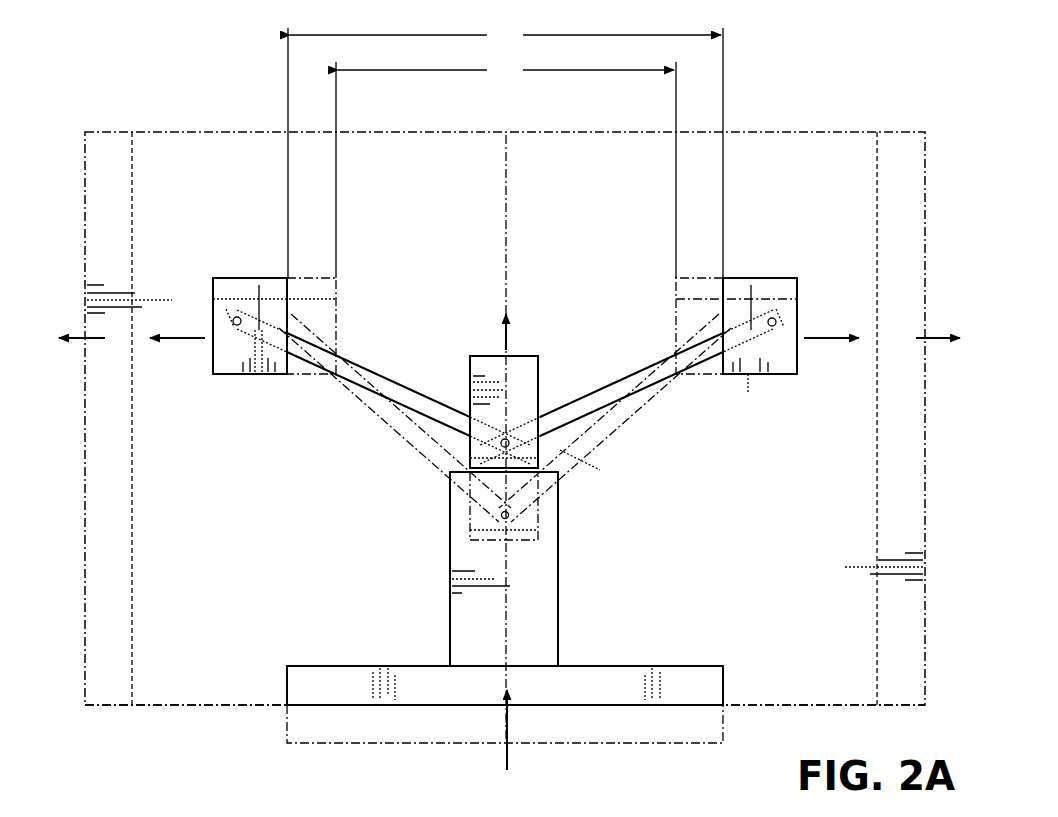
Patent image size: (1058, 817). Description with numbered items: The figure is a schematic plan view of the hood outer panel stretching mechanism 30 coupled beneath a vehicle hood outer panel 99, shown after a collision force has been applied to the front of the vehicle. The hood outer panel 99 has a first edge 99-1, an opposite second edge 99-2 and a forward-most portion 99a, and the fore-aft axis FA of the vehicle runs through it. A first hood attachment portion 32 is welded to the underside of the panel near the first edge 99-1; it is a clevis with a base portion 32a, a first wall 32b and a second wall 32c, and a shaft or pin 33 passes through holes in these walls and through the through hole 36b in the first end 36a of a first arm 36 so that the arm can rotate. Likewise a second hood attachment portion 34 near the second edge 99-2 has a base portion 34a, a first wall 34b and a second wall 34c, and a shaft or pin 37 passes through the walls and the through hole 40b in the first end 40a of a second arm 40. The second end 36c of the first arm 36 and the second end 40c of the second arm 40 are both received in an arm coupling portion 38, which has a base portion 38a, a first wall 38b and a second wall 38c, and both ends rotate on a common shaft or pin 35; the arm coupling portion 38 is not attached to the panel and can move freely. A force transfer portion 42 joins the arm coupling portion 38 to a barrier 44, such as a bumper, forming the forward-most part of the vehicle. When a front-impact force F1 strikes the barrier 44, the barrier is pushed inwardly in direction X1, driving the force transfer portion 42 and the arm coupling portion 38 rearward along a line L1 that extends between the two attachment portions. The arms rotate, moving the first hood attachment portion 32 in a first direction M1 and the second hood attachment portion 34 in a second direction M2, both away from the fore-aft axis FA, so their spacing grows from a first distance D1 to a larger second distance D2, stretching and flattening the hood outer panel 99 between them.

The hood outer panel stretching mechanism 30 is at (224, 562).
The first hood attachment portion 32 is at (210, 345).
The base portion 32a is at (214, 318).
The first wall 32b is at (233, 362).
The second wall 32c is at (252, 418).
The shaft or pin 33 is at (237, 316).
The second hood attachment portion 34 is at (723, 276).
The base portion 34a is at (738, 290).
The first wall 34b is at (752, 318).
The second wall 34c is at (795, 289).
The shaft or pin 35 is at (509, 438).
The first arm 36 is at (362, 395).
The first end of first arm 36a is at (234, 340).
The through hole 36b is at (236, 317).
The second end of first arm 36c is at (592, 458).
The shaft or pin 37 is at (777, 320).
The arm coupling portion 38 is at (466, 453).
The base portion 38a is at (530, 541).
The first wall 38b is at (480, 362).
The second wall 38c is at (472, 335).
The second arm 40 is at (626, 406).
The first end of second arm 40a is at (748, 378).
The through hole 40b is at (768, 311).
The second end of second arm 40c is at (462, 442).
The force transfer portion 42 is at (498, 623).
The barrier 44 is at (312, 708).
The vehicle hood outer panel 99 is at (80, 270).
The first edge 99-1 is at (84, 166).
The second edge 99-2 is at (925, 166).
The forward-most portion 99a is at (258, 707).
The first distance D1 is at (506, 169).
The second distance D2 is at (505, 152).
The line L1 is at (508, 240).
The direction X1 is at (523, 332).
The first direction M1 is at (132, 324).
The second direction M2 is at (882, 324).
The front-impact force F1 is at (492, 731).
The fore-aft axis FA is at (515, 600).